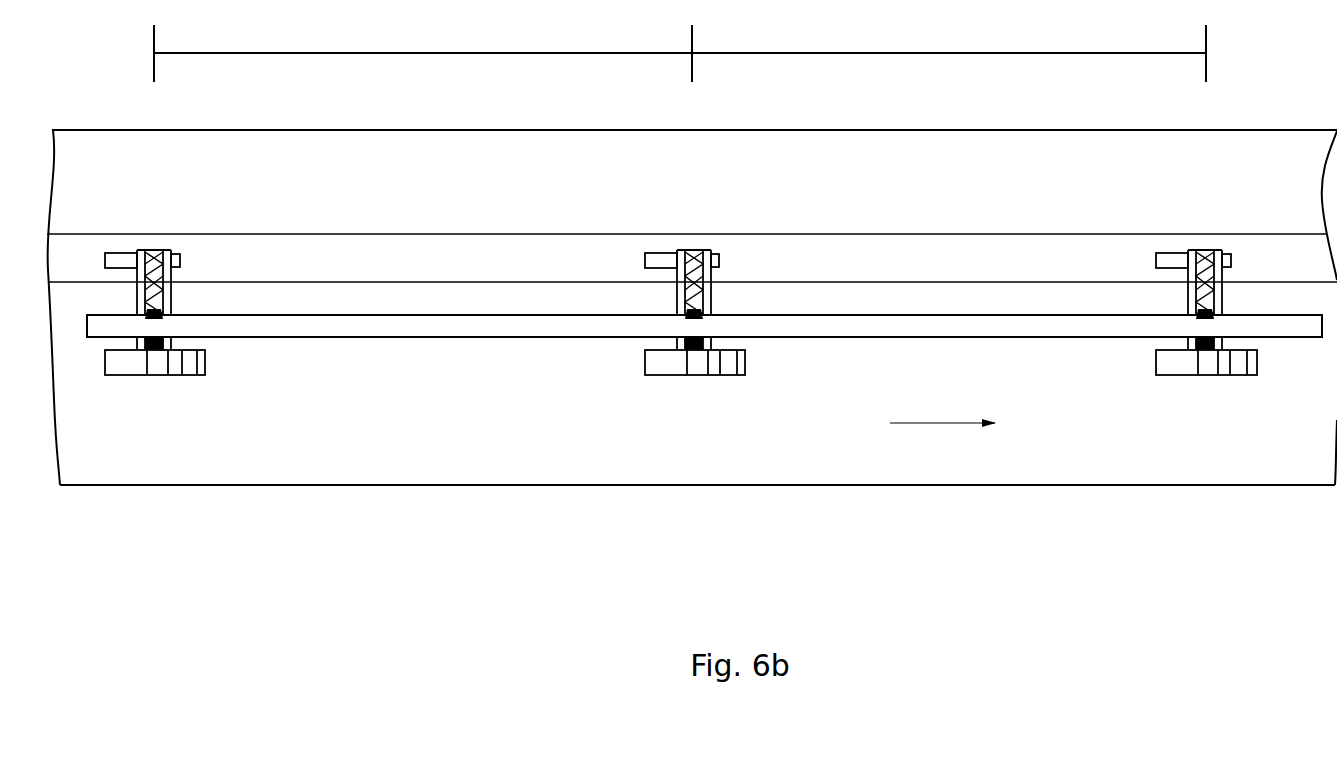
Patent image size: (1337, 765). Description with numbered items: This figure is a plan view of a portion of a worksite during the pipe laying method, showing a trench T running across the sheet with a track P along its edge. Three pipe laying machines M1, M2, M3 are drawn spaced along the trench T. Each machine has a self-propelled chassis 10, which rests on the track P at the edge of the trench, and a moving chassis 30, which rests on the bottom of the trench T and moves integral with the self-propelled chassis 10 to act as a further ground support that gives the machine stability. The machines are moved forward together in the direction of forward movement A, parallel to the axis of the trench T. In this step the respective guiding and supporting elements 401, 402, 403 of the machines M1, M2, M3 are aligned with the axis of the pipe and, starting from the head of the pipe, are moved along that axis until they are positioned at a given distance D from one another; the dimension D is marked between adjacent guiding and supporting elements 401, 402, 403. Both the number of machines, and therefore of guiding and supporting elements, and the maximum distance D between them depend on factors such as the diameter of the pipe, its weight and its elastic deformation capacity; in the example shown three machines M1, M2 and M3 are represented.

The self-propelled chassis 10 is at (127, 360).
The moving chassis 30 is at (118, 258).
The guiding and supporting element 401 is at (1205, 343).
The guiding and supporting element 402 is at (688, 350).
The guiding and supporting element 403 is at (142, 350).
The pipe laying machine M1 is at (1230, 383).
The pipe laying machine M2 is at (723, 385).
The pipe laying machine M3 is at (175, 383).
The trench T is at (432, 260).
The track P is at (433, 442).
The direction of forward movement A is at (942, 407).
The distance D is at (680, 48).